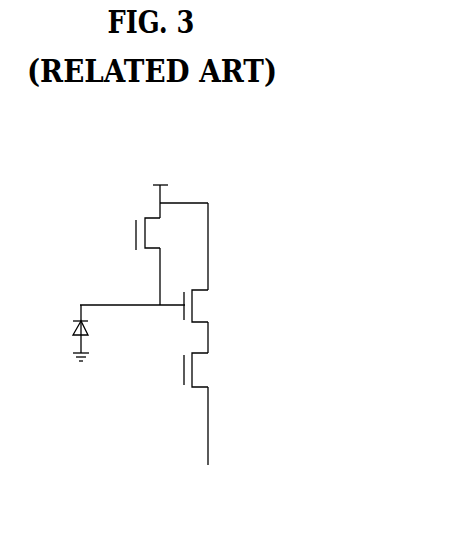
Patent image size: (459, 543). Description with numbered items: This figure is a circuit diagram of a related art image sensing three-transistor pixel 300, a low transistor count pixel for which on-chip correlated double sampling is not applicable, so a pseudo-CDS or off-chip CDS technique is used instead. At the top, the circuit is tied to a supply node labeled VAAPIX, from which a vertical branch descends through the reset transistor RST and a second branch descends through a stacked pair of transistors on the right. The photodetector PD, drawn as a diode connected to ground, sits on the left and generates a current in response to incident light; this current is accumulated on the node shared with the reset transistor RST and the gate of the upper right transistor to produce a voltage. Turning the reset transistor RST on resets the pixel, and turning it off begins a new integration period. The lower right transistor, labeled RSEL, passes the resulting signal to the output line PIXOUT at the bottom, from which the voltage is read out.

The 3T pixel 300 is at (345, 164).
The pixel supply voltage VAAPIX is at (159, 185).
The reset transistor RST is at (136, 233).
The row select transistor RSEL is at (184, 368).
The photodetector PD is at (94, 333).
The pixel output line PIXOUT is at (208, 438).